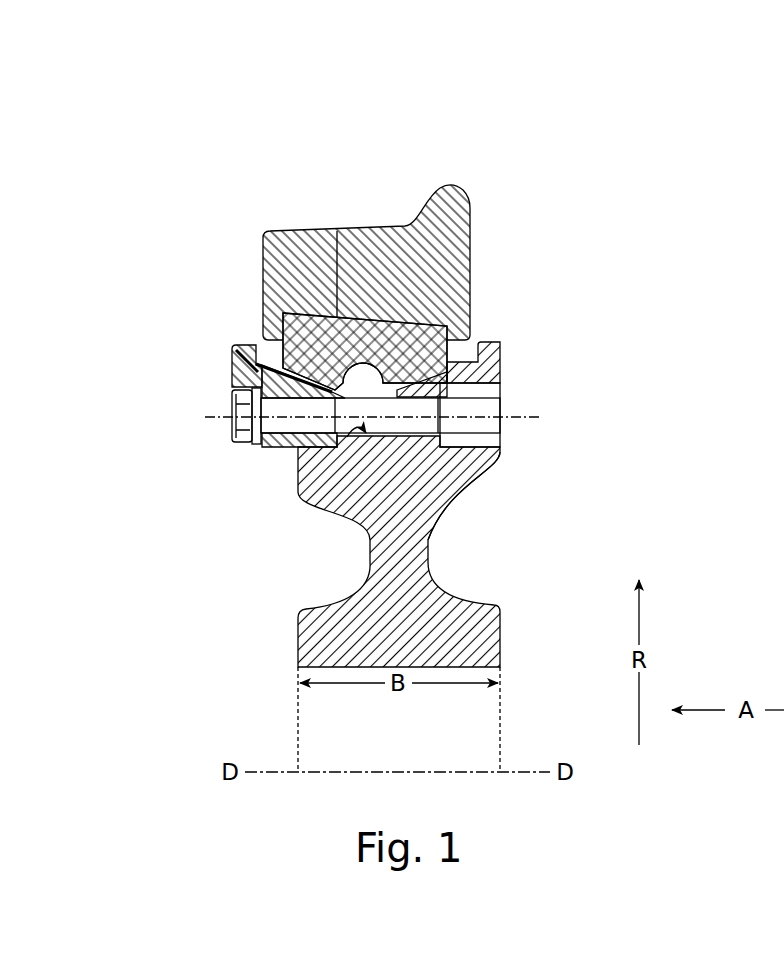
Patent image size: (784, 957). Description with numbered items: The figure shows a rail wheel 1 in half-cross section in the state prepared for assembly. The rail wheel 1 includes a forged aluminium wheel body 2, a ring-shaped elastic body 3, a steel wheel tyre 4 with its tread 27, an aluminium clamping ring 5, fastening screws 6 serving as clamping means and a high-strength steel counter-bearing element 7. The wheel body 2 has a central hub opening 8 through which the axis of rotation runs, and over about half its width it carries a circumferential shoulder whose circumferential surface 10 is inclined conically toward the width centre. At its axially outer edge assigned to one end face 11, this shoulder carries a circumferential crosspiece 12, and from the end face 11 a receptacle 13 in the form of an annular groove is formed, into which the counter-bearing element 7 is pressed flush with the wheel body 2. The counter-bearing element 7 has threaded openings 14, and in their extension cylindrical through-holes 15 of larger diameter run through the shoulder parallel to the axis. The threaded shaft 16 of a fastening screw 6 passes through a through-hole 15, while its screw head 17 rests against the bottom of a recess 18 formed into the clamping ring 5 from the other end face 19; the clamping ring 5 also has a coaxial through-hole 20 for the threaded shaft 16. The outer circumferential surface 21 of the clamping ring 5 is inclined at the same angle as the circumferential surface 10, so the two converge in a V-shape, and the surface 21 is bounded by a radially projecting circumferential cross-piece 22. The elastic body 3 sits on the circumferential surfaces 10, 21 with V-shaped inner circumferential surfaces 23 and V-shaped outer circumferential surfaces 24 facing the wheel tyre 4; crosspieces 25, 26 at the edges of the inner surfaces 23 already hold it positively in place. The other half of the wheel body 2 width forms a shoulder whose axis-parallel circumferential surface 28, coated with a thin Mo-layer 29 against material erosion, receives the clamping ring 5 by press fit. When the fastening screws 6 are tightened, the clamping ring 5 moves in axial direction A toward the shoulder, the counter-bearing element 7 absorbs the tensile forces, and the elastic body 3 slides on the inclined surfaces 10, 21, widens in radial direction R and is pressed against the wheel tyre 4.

The rail wheel 1 is at (243, 143).
The wheel body 2 is at (298, 640).
The elastic body 3 is at (458, 322).
The wheel tyre 4 is at (368, 228).
The clamping ring 5 is at (230, 382).
The fastening screw 6 is at (265, 446).
The counter-bearing element 7 is at (485, 387).
The hub opening 8 is at (399, 719).
The circumferential surface 10 is at (466, 327).
The end face 11 is at (570, 460).
The circumferential crosspiece 12 is at (502, 347).
The receptacle 13 is at (455, 457).
The threaded opening 14 is at (485, 408).
The through-hole 15 is at (413, 443).
The threaded shaft 16 is at (263, 300).
The screw head 17 is at (238, 411).
The recess 18 is at (231, 388).
The other end face 19 is at (200, 479).
The through-hole 20 is at (280, 444).
The outer circumferential surface 21 is at (237, 347).
The circumferential cross-piece 22 is at (232, 383).
The inner circumferential surface 23 is at (400, 357).
The outer circumferential surface 24 is at (332, 232).
The crosspiece 25 is at (262, 353).
The crosspiece 26 is at (459, 358).
The tread 27 is at (290, 230).
The circumferential surface 28 is at (331, 444).
The Mo-layer 29 is at (293, 444).